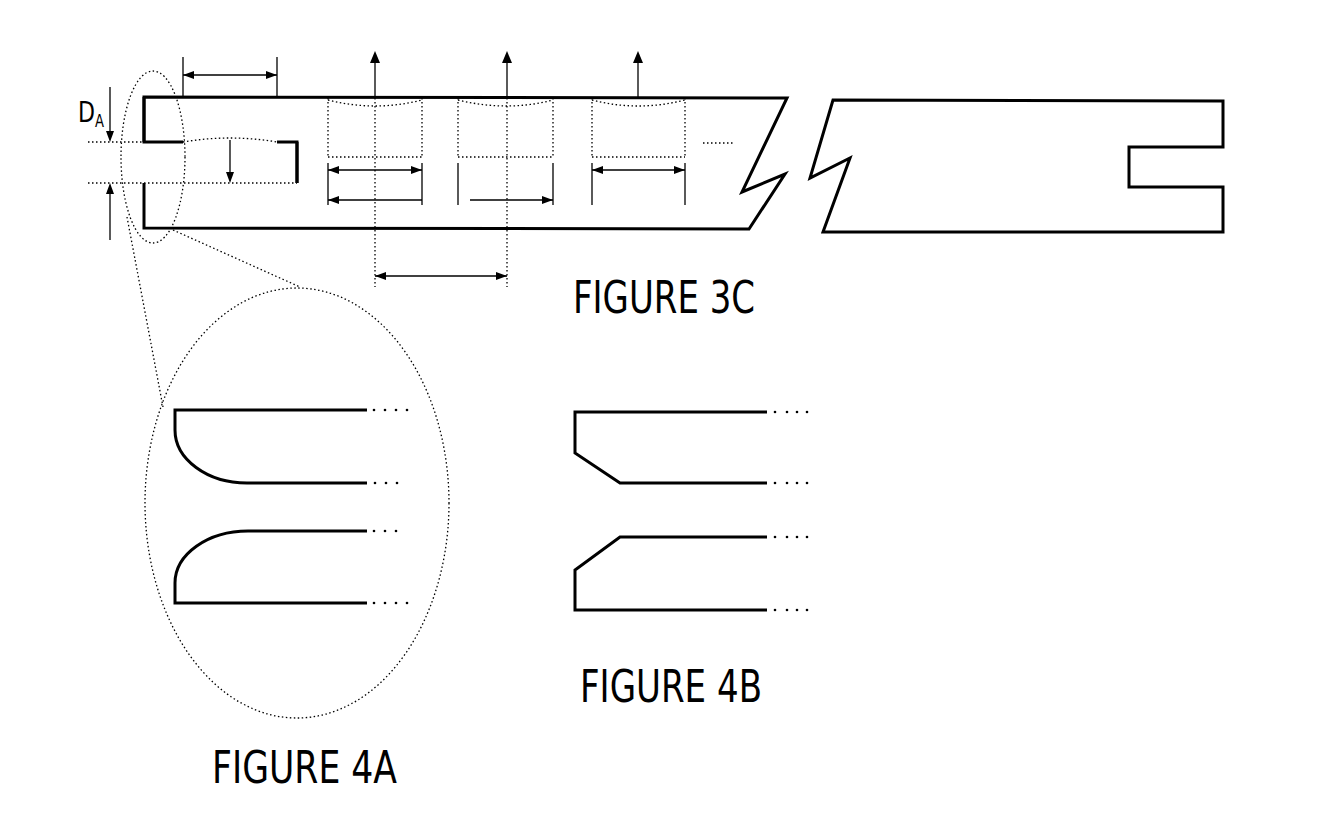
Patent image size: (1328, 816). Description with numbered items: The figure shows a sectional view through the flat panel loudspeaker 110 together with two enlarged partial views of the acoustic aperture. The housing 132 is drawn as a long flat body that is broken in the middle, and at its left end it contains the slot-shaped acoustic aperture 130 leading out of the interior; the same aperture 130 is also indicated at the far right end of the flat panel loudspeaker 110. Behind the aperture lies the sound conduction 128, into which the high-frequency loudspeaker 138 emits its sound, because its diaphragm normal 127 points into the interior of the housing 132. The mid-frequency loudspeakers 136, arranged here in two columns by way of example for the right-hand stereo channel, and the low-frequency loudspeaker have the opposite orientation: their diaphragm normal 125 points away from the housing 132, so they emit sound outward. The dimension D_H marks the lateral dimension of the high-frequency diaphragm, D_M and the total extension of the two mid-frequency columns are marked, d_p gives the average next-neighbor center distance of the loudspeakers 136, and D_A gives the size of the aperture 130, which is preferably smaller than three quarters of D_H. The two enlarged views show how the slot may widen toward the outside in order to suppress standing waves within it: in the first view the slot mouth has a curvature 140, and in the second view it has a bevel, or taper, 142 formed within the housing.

In FIG. 3C, the body 110 is at (1202, 102).
In FIG. 3C, the diaphragm normal of the mid- and low-frequency loudspeakers 125 is at (638, 80).
In FIG. 3C, the diaphragm normal of the high-frequency loudspeaker 127 is at (267, 175).
In FIG. 3C, the sound conduction 128 is at (205, 155).
In FIG. 3C, the acoustic aperture 130 is at (132, 148).
In FIG. 3C, the housing 132 is at (953, 108).
In FIG. 3C, the loudspeakers 136 is at (390, 112).
In FIG. 3C, the high-frequency loudspeaker 138 is at (258, 125).
In FIG. 4A, the curvature 140 is at (197, 457).
In FIG. 4B, the bevel, or taper 142 is at (590, 465).